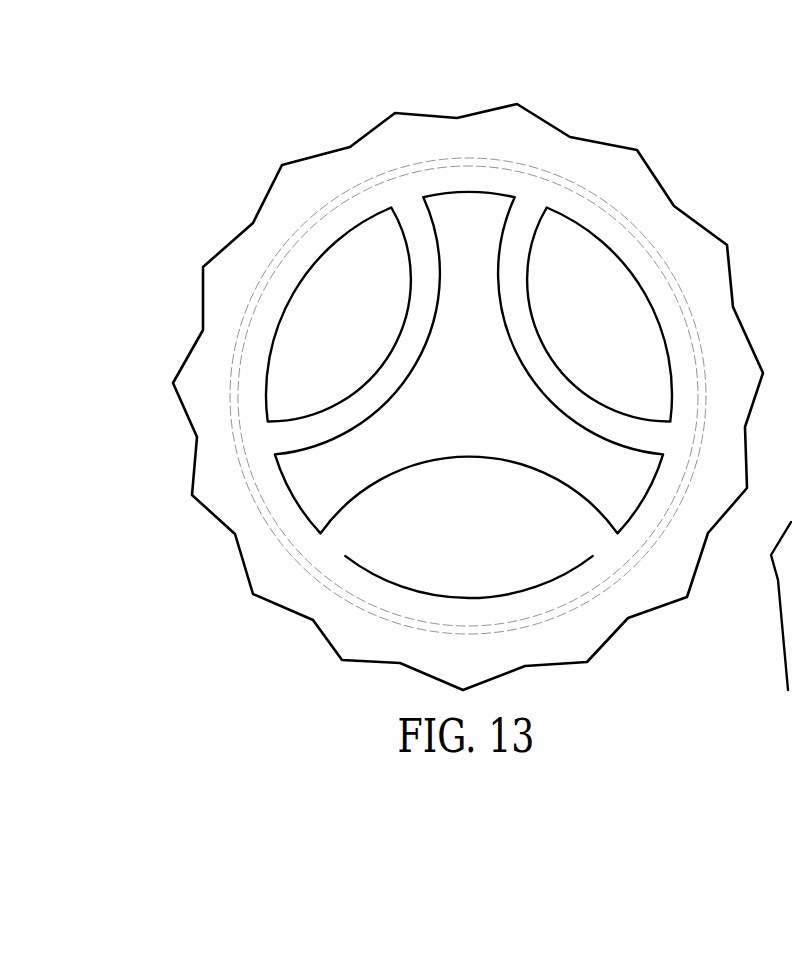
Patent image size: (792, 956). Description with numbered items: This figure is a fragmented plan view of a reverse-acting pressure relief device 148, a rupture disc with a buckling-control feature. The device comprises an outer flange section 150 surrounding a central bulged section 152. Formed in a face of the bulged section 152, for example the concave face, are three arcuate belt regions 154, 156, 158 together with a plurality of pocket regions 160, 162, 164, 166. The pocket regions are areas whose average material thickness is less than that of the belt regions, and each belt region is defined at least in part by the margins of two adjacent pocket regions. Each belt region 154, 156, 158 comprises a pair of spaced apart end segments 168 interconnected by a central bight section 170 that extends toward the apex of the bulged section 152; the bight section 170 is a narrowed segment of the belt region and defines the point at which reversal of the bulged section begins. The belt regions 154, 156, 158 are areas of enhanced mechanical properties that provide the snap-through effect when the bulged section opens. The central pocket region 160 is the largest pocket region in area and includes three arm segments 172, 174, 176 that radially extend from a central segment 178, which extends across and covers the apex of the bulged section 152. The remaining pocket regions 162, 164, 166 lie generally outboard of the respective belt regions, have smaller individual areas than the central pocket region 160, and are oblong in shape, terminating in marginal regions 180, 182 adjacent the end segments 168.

The reverse-acting pressure relief device 148 is at (700, 182).
The outer flange section 150 is at (693, 253).
The central bulged section 152 is at (325, 236).
The arcuate belt region 154 is at (514, 273).
The arcuate belt region 156 is at (384, 497).
The arcuate belt region 158 is at (424, 273).
The central pocket region 160 is at (467, 418).
The pocket region 162 is at (470, 600).
The pocket region 164 is at (654, 365).
The pocket region 166 is at (284, 363).
The end segments 168 is at (343, 535).
The central bight section 170 is at (470, 457).
The arm segment 172 is at (302, 485).
The arm segment 174 is at (640, 477).
The arm segment 176 is at (470, 206).
The central segment 178 is at (472, 393).
The marginal region 180 is at (348, 555).
The marginal region 182 is at (591, 556).